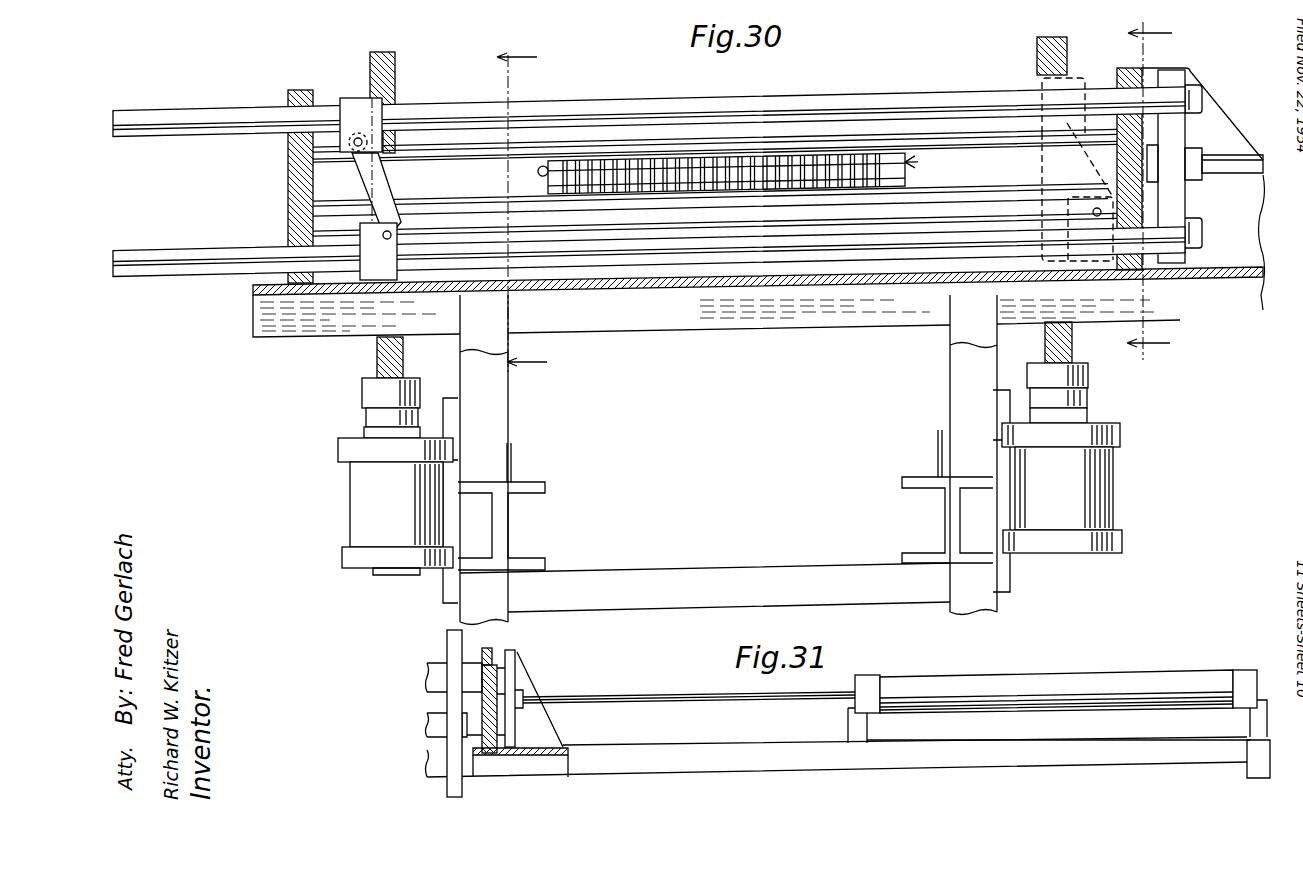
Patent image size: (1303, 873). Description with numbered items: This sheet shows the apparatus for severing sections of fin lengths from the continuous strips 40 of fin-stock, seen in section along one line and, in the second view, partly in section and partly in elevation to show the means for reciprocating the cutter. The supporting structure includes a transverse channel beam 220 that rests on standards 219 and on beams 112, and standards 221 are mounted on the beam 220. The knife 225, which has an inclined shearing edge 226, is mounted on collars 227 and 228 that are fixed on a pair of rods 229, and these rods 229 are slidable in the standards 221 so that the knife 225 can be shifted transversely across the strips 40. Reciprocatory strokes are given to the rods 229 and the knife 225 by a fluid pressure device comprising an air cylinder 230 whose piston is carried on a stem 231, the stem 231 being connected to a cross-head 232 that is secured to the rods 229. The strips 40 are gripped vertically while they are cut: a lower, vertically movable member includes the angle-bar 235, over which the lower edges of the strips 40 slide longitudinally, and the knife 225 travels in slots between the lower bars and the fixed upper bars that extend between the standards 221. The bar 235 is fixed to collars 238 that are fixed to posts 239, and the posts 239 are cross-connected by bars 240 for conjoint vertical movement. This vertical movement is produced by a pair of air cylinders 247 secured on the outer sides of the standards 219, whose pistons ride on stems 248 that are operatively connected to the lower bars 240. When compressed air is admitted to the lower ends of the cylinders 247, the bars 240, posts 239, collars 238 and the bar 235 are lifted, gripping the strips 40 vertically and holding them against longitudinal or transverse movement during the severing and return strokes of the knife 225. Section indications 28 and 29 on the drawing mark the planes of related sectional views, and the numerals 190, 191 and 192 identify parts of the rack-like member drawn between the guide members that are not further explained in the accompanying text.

In FIG. 30, the section line 28- 28 is at (522, 211).
In FIG. 30, the section line 29- 29 is at (1149, 189).
In FIG. 30, the continuous strips 40 is at (770, 172).
In FIG. 30, the beams 112 is at (505, 531).
In FIG. 30, the rack 190 is at (761, 122).
In FIG. 30, the rack teeth 191 is at (818, 172).
In FIG. 30, the pin 192 is at (546, 178).
In FIG. 30, the standards 219 is at (498, 428).
In FIG. 30, the transverse channel beam 220 is at (762, 289).
In FIG. 31, the transverse channel beam 220 is at (848, 757).
In FIG. 30, the standards 221 is at (289, 206).
In FIG. 30, the knife 225 is at (372, 196).
In FIG. 30, the inclined shearing edge 226 is at (388, 178).
In FIG. 30, the collar 227 is at (398, 250).
In FIG. 30, the collar 228 is at (350, 86).
In FIG. 30, the rods 229 is at (673, 117).
In FIG. 31, the rods 229 is at (483, 783).
In FIG. 31, the air cylinder 230 is at (975, 683).
In FIG. 30, the stem 231 is at (1218, 172).
In FIG. 31, the stem 231 is at (700, 693).
In FIG. 30, the cross-head 232 is at (1190, 85).
In FIG. 31, the cross-head 232 is at (512, 677).
In FIG. 30, the angle-bar 235 is at (937, 209).
In FIG. 30, the collars 238 is at (980, 153).
In FIG. 31, the posts 239 is at (452, 697).
In FIG. 30, the bars 240 is at (397, 62).
In FIG. 31, the bars 240 is at (447, 642).
In FIG. 30, the air cylinders 247 is at (730, 499).
In FIG. 30, the stems 248 is at (368, 420).